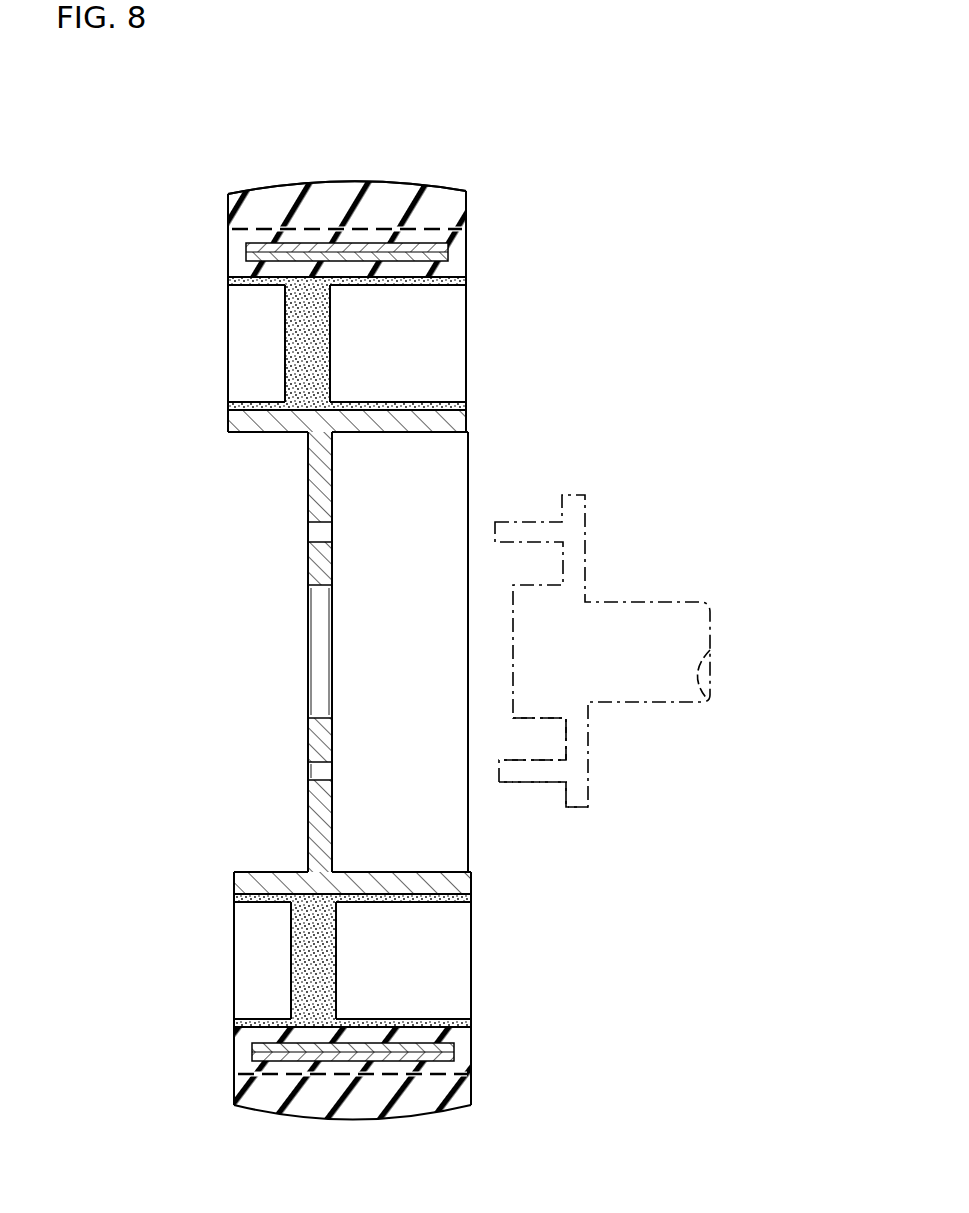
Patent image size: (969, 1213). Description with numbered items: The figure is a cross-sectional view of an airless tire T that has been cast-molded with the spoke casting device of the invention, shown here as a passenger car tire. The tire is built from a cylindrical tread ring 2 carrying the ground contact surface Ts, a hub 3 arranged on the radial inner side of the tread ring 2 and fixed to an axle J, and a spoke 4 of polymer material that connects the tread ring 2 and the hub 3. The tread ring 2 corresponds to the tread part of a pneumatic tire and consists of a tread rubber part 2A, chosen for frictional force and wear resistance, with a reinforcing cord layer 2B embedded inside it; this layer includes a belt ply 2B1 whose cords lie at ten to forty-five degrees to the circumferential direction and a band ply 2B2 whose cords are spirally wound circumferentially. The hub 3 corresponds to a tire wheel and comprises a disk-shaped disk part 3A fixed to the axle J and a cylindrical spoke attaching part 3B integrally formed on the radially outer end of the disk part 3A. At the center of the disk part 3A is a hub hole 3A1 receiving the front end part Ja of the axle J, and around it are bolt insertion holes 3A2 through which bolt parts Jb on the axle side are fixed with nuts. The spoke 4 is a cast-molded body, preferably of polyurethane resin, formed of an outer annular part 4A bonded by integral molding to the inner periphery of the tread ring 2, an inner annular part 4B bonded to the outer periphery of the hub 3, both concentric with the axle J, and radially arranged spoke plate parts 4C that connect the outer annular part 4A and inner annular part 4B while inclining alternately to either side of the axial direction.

The airless tire T is at (382, 579).
The ground contact surface Ts is at (295, 185).
The tread ring 2 is at (481, 217).
The tread rubber part 2A is at (393, 184).
The reinforcing cord layer 2B is at (459, 243).
The belt ply 2B1 is at (446, 247).
The band ply 2B2 is at (428, 226).
The hub 3 is at (183, 725).
The disk part 3A is at (201, 672).
The hub hole 3A1 is at (320, 588).
The bolt insertion holes 3A2 is at (328, 765).
The spoke attaching part 3B is at (293, 902).
The spoke 4 is at (254, 354).
The outer annular part 4A is at (273, 286).
The inner annular part 4B is at (270, 400).
The spoke plate parts 4C is at (271, 338).
The axle J is at (602, 677).
The front end part Ja is at (535, 720).
The bolt parts Jb is at (543, 783).